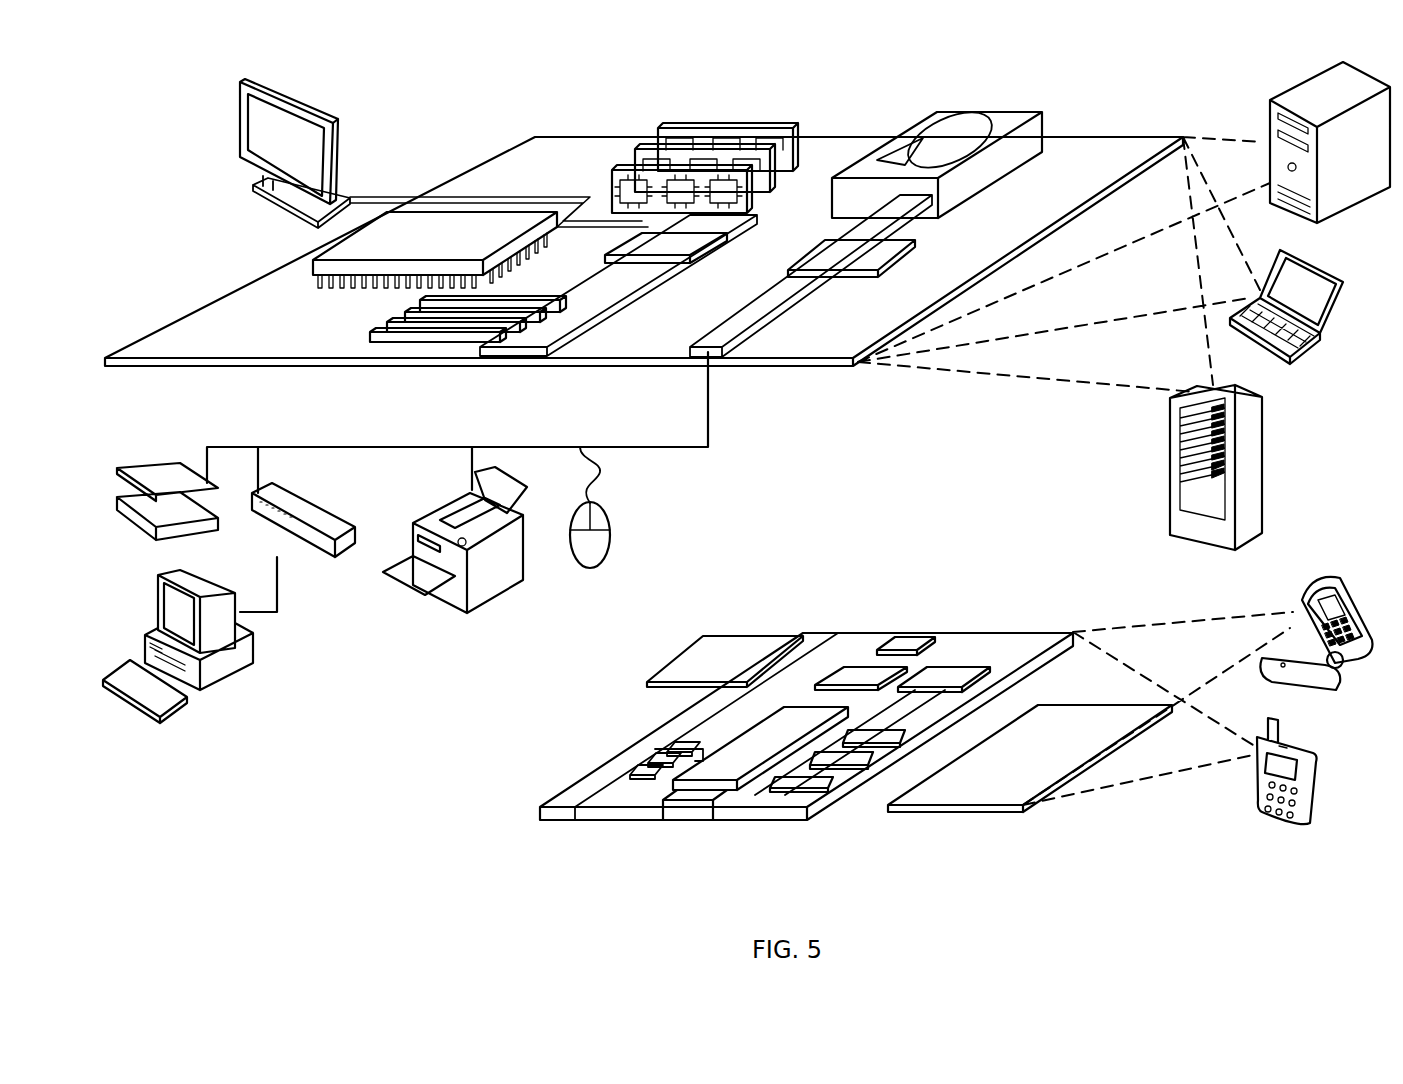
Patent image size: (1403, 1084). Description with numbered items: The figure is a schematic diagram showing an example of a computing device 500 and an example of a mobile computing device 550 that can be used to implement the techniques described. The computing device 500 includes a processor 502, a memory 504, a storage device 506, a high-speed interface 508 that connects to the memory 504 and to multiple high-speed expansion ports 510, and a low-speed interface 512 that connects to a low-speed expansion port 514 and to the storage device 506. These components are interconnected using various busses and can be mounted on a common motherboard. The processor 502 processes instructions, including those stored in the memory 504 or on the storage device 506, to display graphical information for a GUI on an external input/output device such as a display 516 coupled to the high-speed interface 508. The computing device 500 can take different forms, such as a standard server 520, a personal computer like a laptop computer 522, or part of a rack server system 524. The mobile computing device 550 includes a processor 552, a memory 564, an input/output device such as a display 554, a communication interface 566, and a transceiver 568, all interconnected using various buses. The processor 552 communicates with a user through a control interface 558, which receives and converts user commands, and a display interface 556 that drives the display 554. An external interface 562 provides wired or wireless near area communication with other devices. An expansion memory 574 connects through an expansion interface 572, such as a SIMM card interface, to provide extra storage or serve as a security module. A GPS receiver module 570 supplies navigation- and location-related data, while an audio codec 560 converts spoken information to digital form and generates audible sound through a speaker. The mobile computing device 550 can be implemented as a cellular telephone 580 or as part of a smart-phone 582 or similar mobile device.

The computing device 500 is at (457, 105).
The processor 502 is at (313, 263).
The memory 504 is at (668, 128).
The storage device 506 is at (937, 118).
The high-speed interface 508 is at (640, 244).
The high-speed expansion ports 510 is at (390, 320).
The low-speed interface 512 is at (828, 248).
The low-speed expansion port 514 is at (713, 357).
The display 516 is at (240, 82).
The standard server 520 is at (1268, 118).
The laptop computer 522 is at (1336, 277).
The rack server system 524 is at (1172, 494).
The mobile computing device 550 is at (515, 815).
The processor 552 is at (732, 774).
The display 554 is at (987, 793).
The display interface 556 is at (803, 783).
The control interface 558 is at (843, 758).
The audio codec 560 is at (870, 740).
The external interface 562 is at (693, 805).
The memory 564 is at (642, 760).
The communication interface 566 is at (858, 670).
The transceiver 568 is at (940, 670).
The GPS receiver module 570 is at (905, 637).
The expansion interface 572 is at (783, 650).
The expansion memory 574 is at (697, 655).
The cellular telephone 580 is at (1322, 593).
The smart-phone 582 is at (1260, 787).